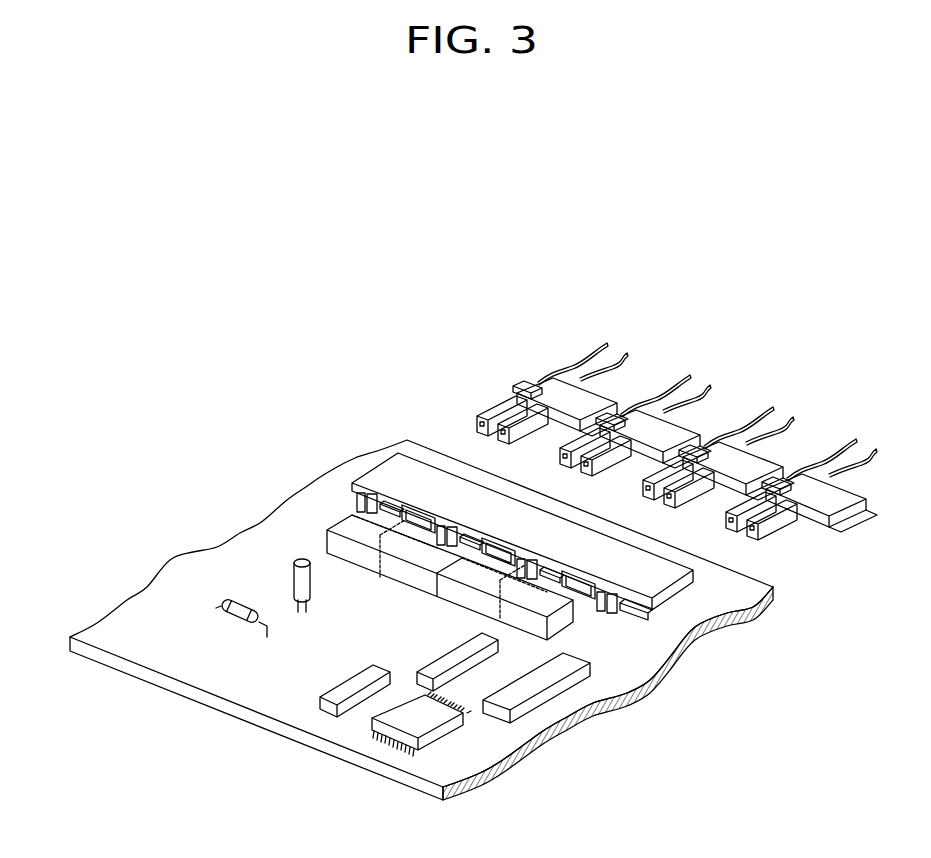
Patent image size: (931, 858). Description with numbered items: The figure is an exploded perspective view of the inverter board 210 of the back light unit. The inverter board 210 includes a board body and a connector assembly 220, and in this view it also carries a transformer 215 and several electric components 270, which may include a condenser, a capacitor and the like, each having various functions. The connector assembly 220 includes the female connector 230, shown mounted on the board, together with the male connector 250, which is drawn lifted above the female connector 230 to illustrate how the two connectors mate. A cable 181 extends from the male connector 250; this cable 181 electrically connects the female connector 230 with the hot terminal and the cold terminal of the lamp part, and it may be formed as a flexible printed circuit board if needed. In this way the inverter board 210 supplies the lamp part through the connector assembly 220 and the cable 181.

The cable 181 is at (597, 363).
The inverter board 210 is at (627, 693).
The transformer 215 is at (337, 520).
The connector assembly 220 is at (598, 465).
The female connector 230 is at (387, 467).
The male connector 250 is at (517, 386).
The electric component 270 is at (310, 577).